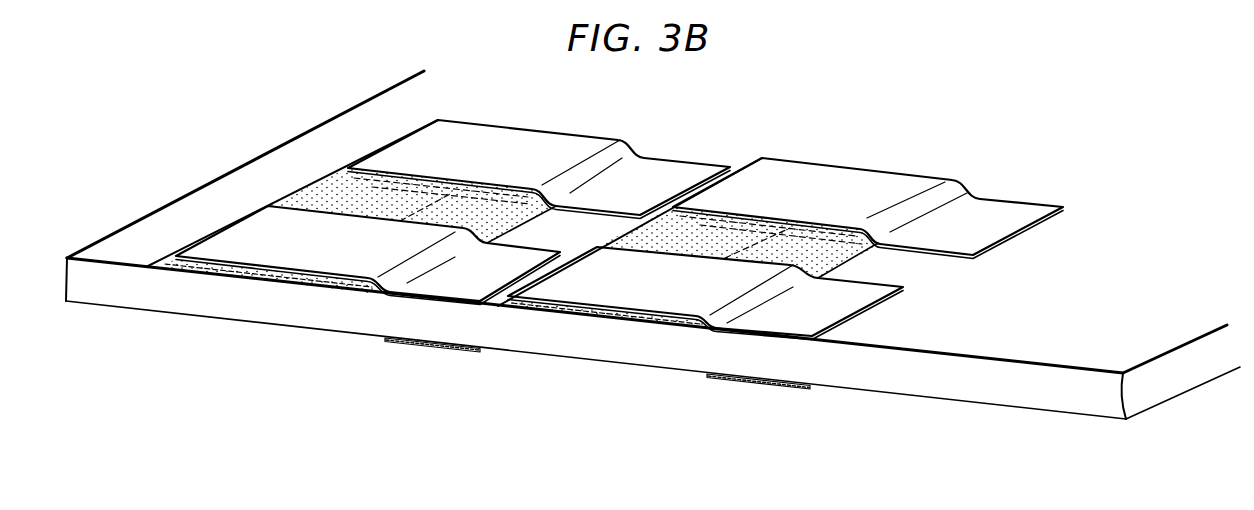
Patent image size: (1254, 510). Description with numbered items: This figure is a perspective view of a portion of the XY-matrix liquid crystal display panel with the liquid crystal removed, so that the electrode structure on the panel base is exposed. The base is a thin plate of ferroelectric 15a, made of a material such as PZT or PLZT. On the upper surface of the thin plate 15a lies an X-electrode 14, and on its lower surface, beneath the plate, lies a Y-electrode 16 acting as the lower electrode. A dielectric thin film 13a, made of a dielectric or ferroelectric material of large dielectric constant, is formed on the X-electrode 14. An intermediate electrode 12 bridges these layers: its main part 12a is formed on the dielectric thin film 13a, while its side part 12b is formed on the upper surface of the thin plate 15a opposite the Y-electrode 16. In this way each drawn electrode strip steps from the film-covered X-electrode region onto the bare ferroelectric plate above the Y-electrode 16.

The intermediate electrode 12 is at (730, 337).
The main part of intermediate electrode 12a is at (546, 313).
The side part of intermediate electrode 12b is at (868, 296).
The dielectric thin film 13a is at (648, 321).
The X-electrode 14 is at (604, 353).
The thin plate of ferroelectric 15a is at (908, 385).
The Y-electrode 16 is at (730, 381).